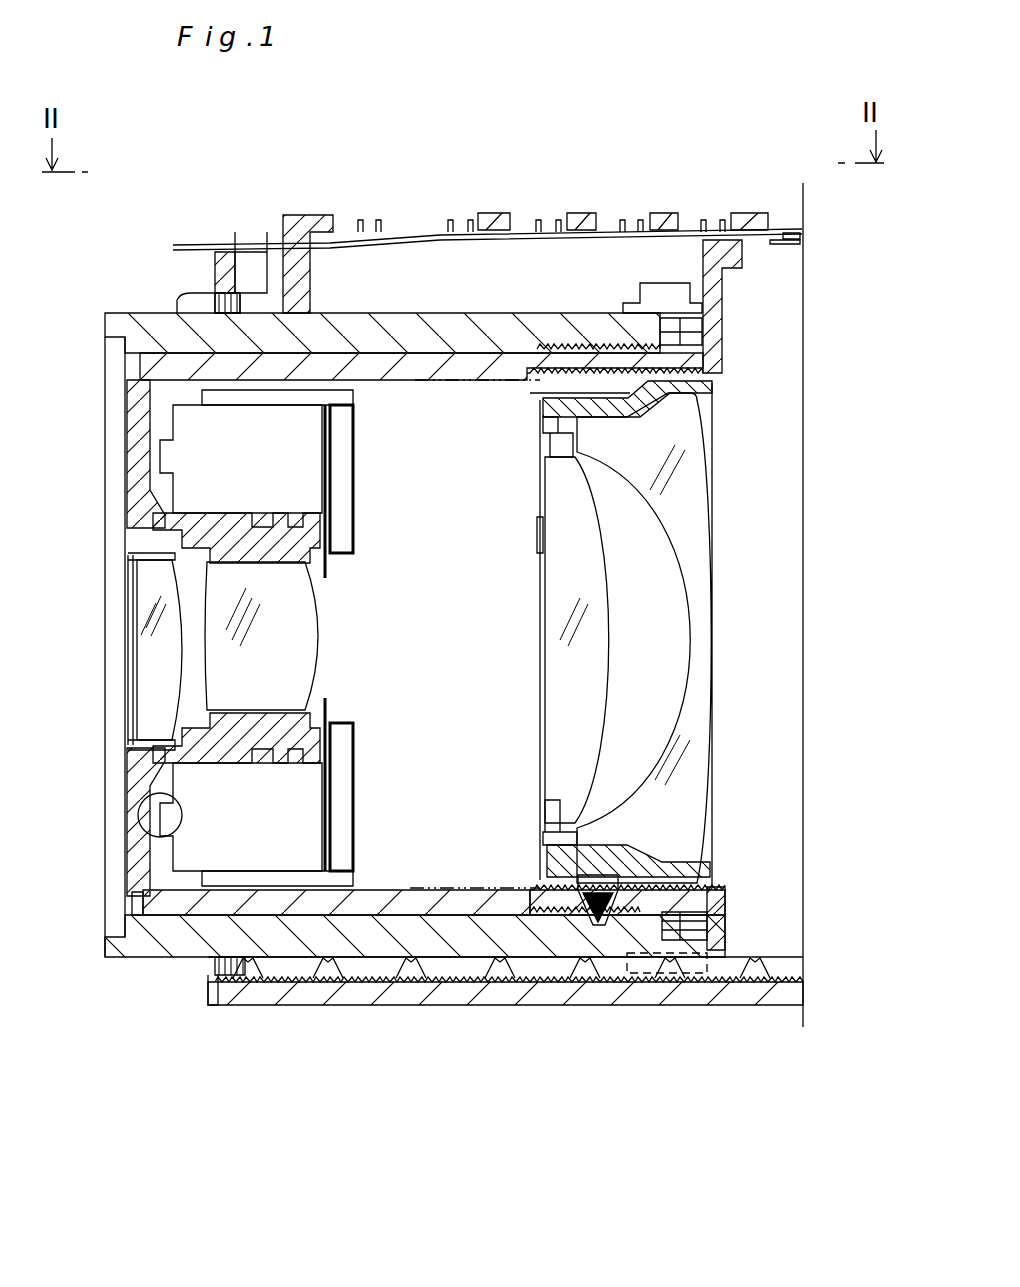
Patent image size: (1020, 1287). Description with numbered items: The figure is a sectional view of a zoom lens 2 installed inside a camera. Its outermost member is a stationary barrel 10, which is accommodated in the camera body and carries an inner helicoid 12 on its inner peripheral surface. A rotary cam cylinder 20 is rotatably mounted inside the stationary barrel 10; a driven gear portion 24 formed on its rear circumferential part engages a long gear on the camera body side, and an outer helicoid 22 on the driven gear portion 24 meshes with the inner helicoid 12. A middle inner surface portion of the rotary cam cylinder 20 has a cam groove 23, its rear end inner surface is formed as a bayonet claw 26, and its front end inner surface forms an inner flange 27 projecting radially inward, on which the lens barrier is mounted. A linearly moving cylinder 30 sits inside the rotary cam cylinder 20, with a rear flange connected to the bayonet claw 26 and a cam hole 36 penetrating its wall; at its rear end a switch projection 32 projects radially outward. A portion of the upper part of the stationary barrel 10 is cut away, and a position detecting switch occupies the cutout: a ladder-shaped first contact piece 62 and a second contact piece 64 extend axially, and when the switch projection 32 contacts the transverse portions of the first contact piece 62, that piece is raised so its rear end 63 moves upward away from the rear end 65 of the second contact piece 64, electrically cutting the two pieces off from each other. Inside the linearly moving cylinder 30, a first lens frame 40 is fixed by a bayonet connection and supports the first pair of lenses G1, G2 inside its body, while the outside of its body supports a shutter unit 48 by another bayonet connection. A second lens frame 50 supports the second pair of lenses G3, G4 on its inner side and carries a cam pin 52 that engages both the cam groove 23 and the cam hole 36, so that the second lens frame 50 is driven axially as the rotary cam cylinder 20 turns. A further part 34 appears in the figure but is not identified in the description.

The zoom lens 2 is at (569, 166).
The stationary barrel 10 is at (480, 1000).
The inner helicoid 12 is at (586, 977).
The rotary cam cylinder 20 is at (380, 942).
The outer helicoid 22 is at (678, 990).
The cam groove 23 is at (600, 915).
The driven gear portion 24 is at (645, 283).
The bayonet claw 26 is at (704, 928).
The inner flange 27 is at (133, 902).
The linearly moving cylinder 30 is at (312, 905).
The switch projection 32 is at (740, 252).
The flange 34 is at (727, 910).
The cam hole 36 is at (578, 870).
The first lens frame 40 is at (303, 552).
The shutter unit 48 is at (215, 461).
The second lens frame 50 is at (543, 397).
The cam pin 52 is at (593, 903).
The first contact piece 62 is at (622, 228).
The rear end of first contact piece 63 is at (783, 238).
The second contact piece 64 is at (622, 240).
The rear end of second contact piece 65 is at (775, 245).
The first lens G1 is at (146, 690).
The second lens G2 is at (303, 640).
The third lens G3 is at (558, 600).
The fourth lens G4 is at (698, 532).